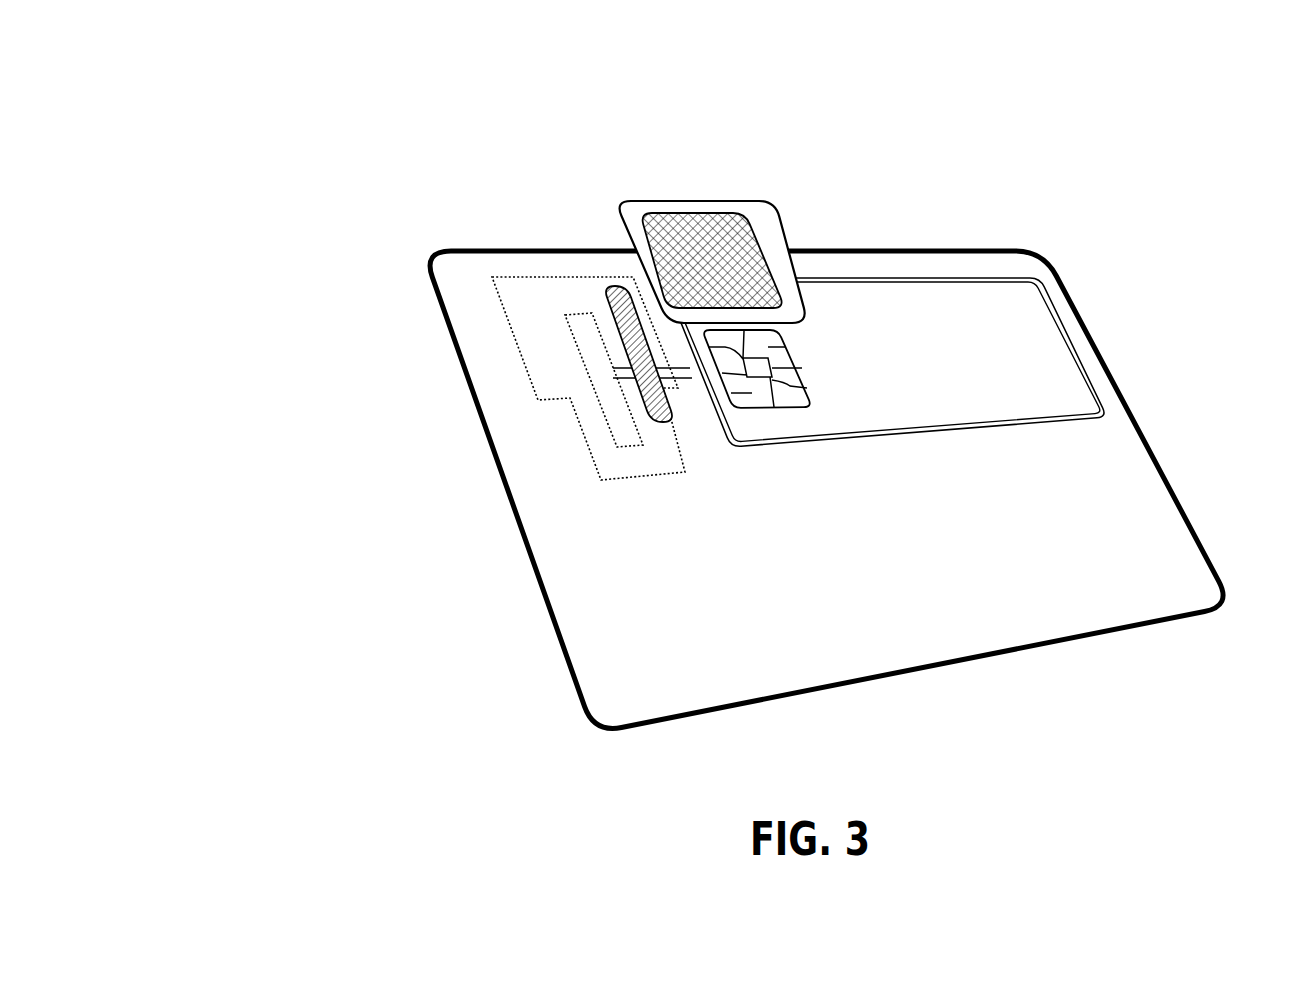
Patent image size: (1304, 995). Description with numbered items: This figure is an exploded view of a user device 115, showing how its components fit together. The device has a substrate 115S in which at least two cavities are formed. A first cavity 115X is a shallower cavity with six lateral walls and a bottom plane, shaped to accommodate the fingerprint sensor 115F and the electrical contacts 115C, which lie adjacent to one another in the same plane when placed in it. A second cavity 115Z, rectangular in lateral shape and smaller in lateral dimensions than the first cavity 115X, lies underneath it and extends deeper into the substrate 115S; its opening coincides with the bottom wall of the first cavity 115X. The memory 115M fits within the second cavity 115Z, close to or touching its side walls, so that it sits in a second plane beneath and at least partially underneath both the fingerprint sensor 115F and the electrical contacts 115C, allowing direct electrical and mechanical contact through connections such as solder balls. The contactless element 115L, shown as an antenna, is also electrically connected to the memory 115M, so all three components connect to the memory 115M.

The user device 115 is at (356, 132).
The substrate 115S is at (465, 283).
The first cavity 115X is at (540, 352).
The second cavity 115Z is at (612, 432).
The memory 115M is at (598, 281).
The fingerprint sensor 115F is at (700, 188).
The electrical contacts 115C is at (807, 343).
The contactless element 115L is at (912, 267).